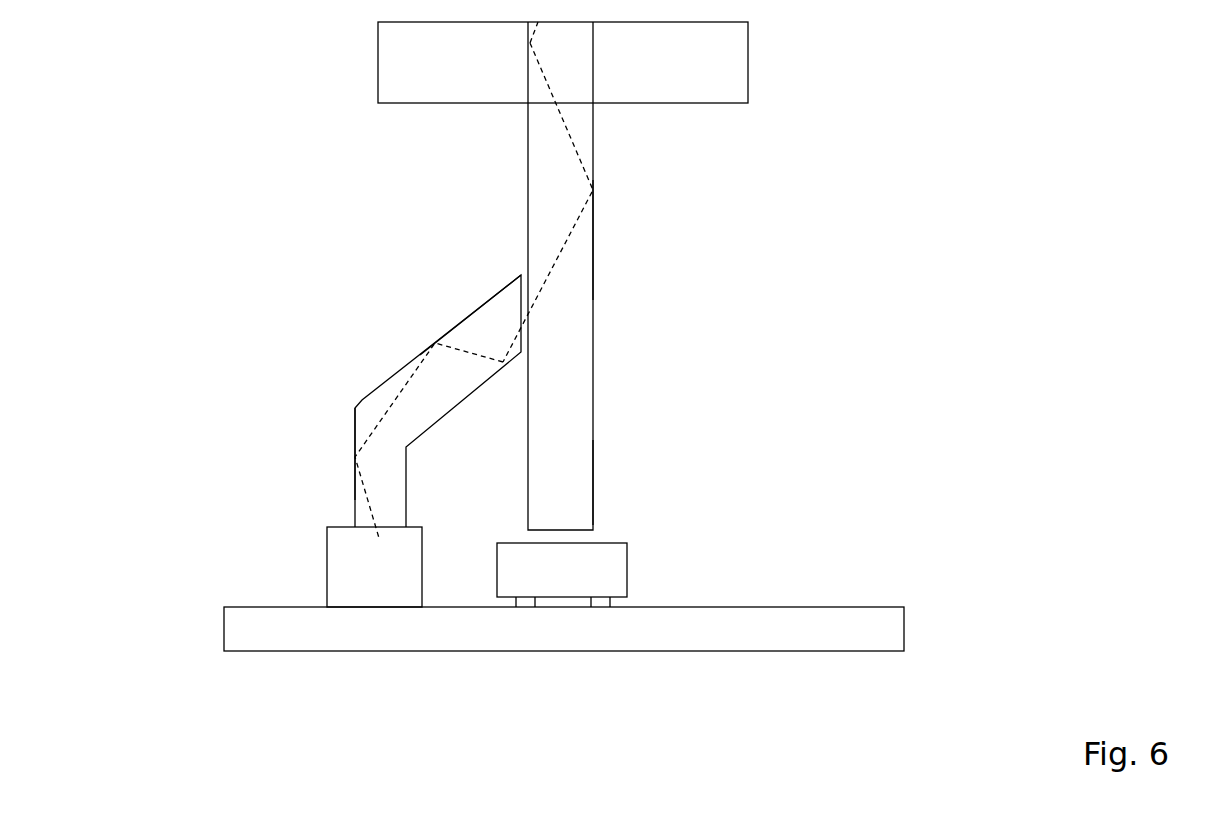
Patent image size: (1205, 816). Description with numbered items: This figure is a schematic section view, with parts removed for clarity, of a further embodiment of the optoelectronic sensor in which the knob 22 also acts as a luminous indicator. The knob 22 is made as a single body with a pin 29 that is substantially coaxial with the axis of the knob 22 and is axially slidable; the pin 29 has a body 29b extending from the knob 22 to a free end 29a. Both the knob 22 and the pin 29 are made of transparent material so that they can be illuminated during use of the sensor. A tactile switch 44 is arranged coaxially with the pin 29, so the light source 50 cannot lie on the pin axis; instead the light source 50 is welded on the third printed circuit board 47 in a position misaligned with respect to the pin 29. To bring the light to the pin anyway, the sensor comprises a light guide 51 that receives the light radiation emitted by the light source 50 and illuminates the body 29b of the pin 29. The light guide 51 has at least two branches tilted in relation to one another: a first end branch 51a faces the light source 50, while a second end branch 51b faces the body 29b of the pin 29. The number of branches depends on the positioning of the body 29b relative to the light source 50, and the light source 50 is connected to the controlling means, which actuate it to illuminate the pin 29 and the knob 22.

The knob 22 is at (366, 65).
The pin 29 is at (570, 368).
The free end 29a is at (572, 500).
The body 29b is at (570, 283).
The tactile switch 44 is at (597, 578).
The third printed circuit board 47 is at (728, 627).
The light source 50 is at (377, 582).
The light guide 51 is at (373, 398).
The first end branch 51a is at (357, 427).
The second end branch 51b is at (467, 333).